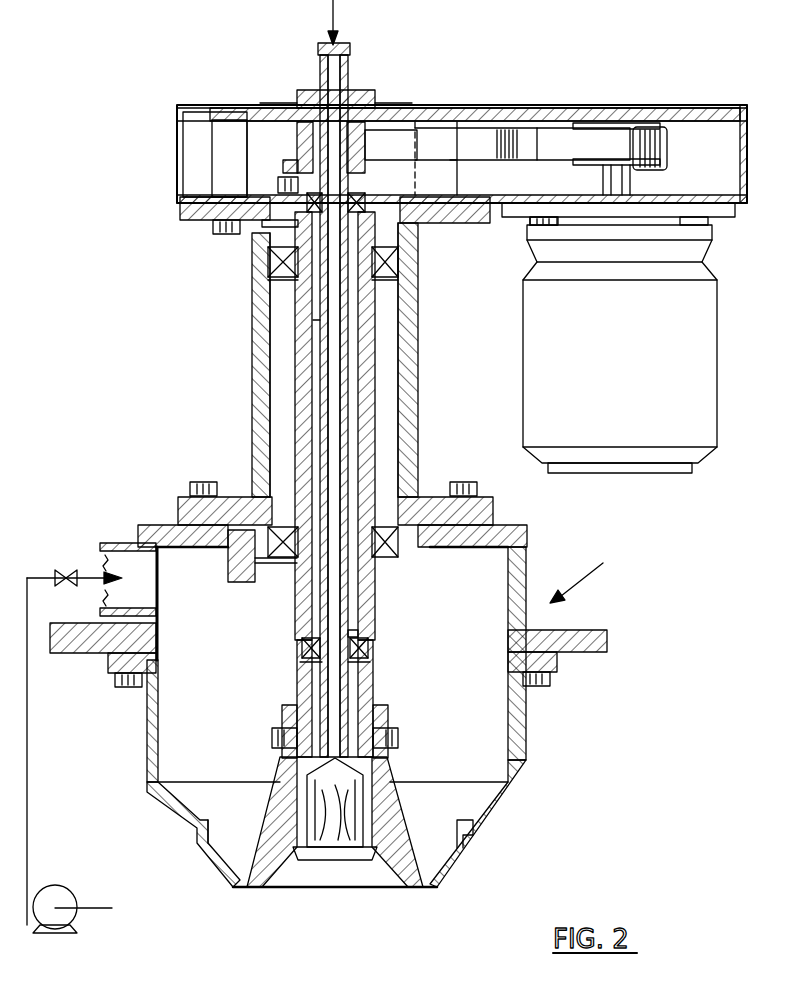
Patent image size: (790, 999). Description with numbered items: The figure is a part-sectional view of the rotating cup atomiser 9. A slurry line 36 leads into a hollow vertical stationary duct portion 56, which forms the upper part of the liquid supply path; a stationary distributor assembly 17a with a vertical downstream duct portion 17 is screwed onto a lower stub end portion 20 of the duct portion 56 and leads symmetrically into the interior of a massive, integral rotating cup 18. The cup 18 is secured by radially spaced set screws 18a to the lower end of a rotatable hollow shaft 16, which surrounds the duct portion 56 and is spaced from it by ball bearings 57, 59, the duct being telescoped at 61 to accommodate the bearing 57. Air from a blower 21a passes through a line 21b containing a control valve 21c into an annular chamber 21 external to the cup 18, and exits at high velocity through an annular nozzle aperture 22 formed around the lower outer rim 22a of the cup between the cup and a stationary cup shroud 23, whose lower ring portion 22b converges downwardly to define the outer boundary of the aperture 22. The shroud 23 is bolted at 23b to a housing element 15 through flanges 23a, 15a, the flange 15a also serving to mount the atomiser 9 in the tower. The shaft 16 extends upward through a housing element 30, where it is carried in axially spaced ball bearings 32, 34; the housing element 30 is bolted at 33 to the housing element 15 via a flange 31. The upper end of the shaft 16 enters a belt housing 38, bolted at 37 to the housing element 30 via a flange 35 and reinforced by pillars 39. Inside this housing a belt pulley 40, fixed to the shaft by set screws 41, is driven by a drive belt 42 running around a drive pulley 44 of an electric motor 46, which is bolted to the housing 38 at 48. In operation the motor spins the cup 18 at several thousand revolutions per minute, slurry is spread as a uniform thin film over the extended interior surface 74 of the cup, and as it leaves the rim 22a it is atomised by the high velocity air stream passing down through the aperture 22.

The rotating cup atomiser 9 is at (584, 576).
The housing element 15 is at (522, 580).
The flange 15a is at (608, 640).
The rotatable hollow shaft 16 is at (372, 682).
The vertical downstream duct portion 17 is at (365, 762).
The stationary distributor assembly 17a is at (333, 875).
The rotating cup 18 is at (395, 822).
The set screws 18a is at (275, 732).
The lower stub end portion 20 is at (285, 745).
The annular chamber 21 is at (165, 720).
The blower 21a is at (62, 906).
The line 21b is at (27, 835).
The control valve 21c is at (66, 570).
The annular nozzle aperture 22 is at (235, 890).
The rim 22a is at (422, 860).
The lower ring portion 22b is at (205, 850).
The stationary cup shroud 23 is at (526, 760).
The flange 23a is at (560, 668).
The bolts 23b is at (545, 690).
The housing element 30 is at (410, 375).
The flange 31 is at (482, 512).
The ball bearing 32 is at (385, 500).
The bolts 33 is at (465, 483).
The ball bearing 34 is at (400, 265).
The flange 35 is at (222, 212).
The slurry line 36 is at (333, 12).
The bolts 37 is at (300, 212).
The belt housing 38 is at (610, 108).
The pillars 39 is at (225, 160).
The belt pulley 40 is at (285, 165).
The set screws 41 is at (278, 185).
The drive belt 42 is at (543, 135).
The drive pulley 44 is at (655, 150).
The electric motor 46 is at (633, 356).
The bolts 48 is at (690, 225).
The hollow vertical stationary duct portion 56 is at (340, 320).
The ball bearing 57 is at (370, 640).
The ball bearing 59 is at (262, 226).
The telescoped portion 61 is at (300, 648).
The extended interior surface 74 is at (395, 873).